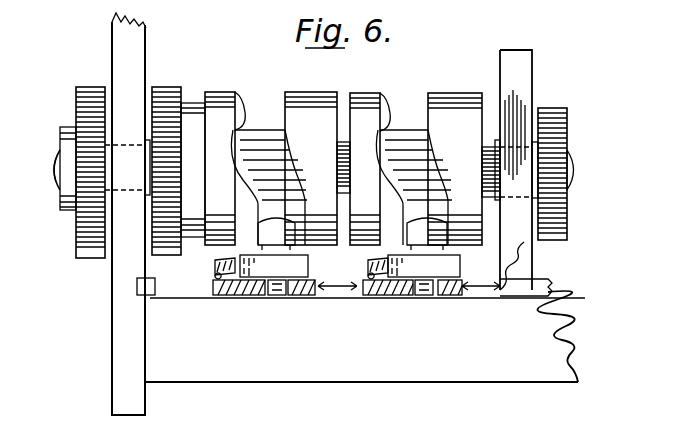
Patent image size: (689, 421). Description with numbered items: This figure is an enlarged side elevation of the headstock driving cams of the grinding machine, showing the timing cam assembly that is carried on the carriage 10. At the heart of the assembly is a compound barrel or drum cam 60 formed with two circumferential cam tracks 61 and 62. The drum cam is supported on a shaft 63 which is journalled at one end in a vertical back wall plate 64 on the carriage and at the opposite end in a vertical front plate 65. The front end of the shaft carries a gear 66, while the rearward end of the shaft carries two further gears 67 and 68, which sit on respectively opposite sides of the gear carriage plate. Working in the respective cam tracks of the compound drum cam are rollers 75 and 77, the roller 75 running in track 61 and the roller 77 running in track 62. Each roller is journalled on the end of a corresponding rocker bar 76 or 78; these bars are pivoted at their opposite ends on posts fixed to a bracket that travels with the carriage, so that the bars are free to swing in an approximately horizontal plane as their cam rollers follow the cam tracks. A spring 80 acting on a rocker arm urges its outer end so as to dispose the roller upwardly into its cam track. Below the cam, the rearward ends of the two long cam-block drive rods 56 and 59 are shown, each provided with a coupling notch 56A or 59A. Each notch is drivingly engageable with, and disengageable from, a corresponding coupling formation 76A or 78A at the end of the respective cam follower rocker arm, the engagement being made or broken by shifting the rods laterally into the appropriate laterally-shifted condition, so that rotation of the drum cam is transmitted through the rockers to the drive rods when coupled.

The carriage 10 is at (532, 361).
The cam-block drive rod 56 is at (207, 291).
The coupling notch 56A is at (270, 302).
The cam-block drive rod 59 is at (540, 283).
The coupling notch 59A is at (417, 302).
The compound barrel or drum cam 60 is at (348, 91).
The cam track 61 is at (267, 92).
The cam track 62 is at (412, 95).
The shaft 63 is at (52, 169).
The vertical back wall plate 64 is at (106, 36).
The vertical front plate 65 is at (530, 64).
The gear 66 is at (553, 108).
The gear 67 is at (167, 88).
The gear 68 is at (90, 88).
The roller 75 is at (276, 234).
The rocker bar 76 is at (306, 277).
The coupling formation 76A is at (277, 296).
The roller 77 is at (427, 234).
The rocker bar 78 is at (455, 277).
The coupling formation 78A is at (423, 298).
The spring 80 is at (210, 271).